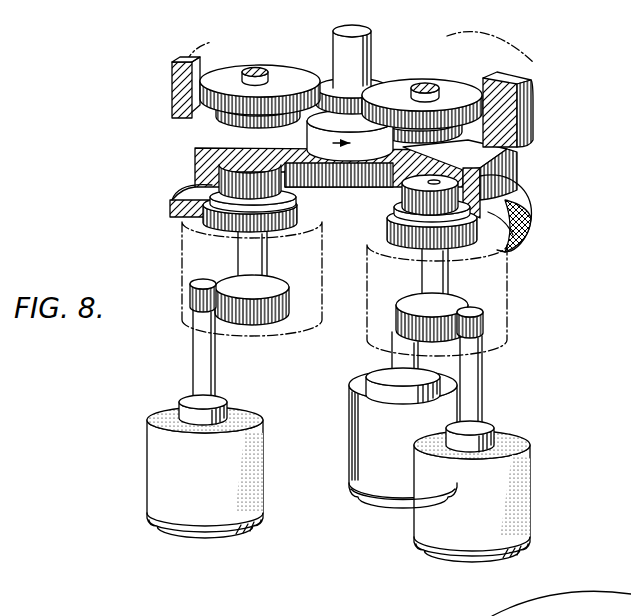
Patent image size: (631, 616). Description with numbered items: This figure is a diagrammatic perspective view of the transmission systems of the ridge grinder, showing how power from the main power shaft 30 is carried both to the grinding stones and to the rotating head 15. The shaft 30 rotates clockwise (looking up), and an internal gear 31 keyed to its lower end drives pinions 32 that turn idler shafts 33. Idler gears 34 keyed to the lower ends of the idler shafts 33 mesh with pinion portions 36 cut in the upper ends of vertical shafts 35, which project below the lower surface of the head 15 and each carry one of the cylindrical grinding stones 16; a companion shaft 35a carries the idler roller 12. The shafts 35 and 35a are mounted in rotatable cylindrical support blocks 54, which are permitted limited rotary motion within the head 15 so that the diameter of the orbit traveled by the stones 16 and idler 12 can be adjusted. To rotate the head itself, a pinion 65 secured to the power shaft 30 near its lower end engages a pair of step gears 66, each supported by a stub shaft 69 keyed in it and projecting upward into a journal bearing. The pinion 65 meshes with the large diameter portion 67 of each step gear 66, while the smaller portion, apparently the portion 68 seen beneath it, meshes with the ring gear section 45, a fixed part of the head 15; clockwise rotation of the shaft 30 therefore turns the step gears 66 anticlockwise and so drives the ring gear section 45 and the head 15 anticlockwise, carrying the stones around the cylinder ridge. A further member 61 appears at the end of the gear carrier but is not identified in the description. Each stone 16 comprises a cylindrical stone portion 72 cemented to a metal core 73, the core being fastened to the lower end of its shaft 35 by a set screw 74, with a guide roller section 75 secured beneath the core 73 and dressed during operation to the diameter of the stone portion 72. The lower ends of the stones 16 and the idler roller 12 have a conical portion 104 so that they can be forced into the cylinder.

The idler roller 12 is at (346, 435).
The rotating head 15 is at (542, 52).
The rotary grinding stones 16 is at (343, 484).
The main power shaft 30 is at (372, 46).
The internal gear 31 is at (520, 167).
The pinions 32 is at (218, 185).
The idler shafts 33 is at (238, 258).
The idler gears 34 is at (290, 296).
The vertical shafts 35 is at (194, 373).
The shaft of the idler 35a is at (372, 370).
The pinion portions 36 is at (200, 290).
The ring gear section 45 is at (533, 118).
The rotatable cylindrical support blocks 54 is at (180, 240).
The cam 61 is at (536, 214).
The pinion 65 is at (386, 80).
The step gears 66 is at (283, 70).
The large diameter portion 67 is at (522, 84).
The pinion gear 68 is at (222, 120).
The stub shaft 69 is at (257, 68).
The cylindrical stone portion 72 is at (147, 472).
The metal core 73 is at (181, 403).
The set screw 74 is at (226, 410).
The guide roller section 75 is at (181, 523).
The conical portion 104 is at (256, 522).